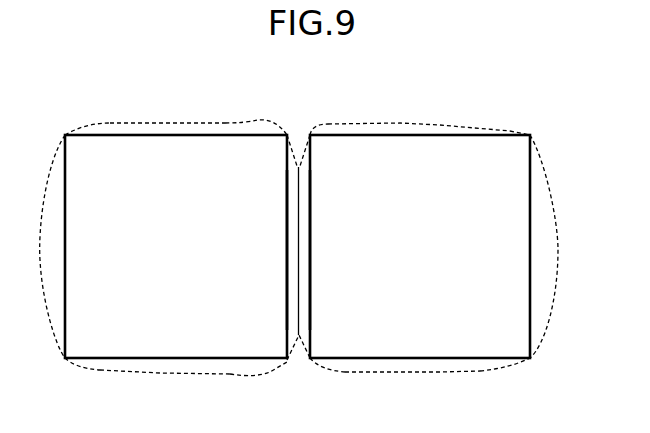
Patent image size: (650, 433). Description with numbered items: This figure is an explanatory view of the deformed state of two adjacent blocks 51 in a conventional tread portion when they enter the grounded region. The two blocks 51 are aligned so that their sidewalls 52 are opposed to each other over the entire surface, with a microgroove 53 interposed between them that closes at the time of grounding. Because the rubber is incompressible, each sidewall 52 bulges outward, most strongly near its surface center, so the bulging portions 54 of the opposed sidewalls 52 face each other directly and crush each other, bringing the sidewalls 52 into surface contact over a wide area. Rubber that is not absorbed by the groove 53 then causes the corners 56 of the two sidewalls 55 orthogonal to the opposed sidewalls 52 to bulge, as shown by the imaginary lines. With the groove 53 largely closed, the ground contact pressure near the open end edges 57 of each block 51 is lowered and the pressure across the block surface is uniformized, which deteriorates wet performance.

The block 51 is at (168, 150).
The sidewall 52 is at (312, 177).
The microgroove 53 is at (294, 239).
The bulging portion 54 is at (293, 203).
The sidewall orthogonal to the opposed sidewalls 55 is at (223, 134).
The corner 56 is at (281, 134).
The open end edge 57 is at (140, 134).